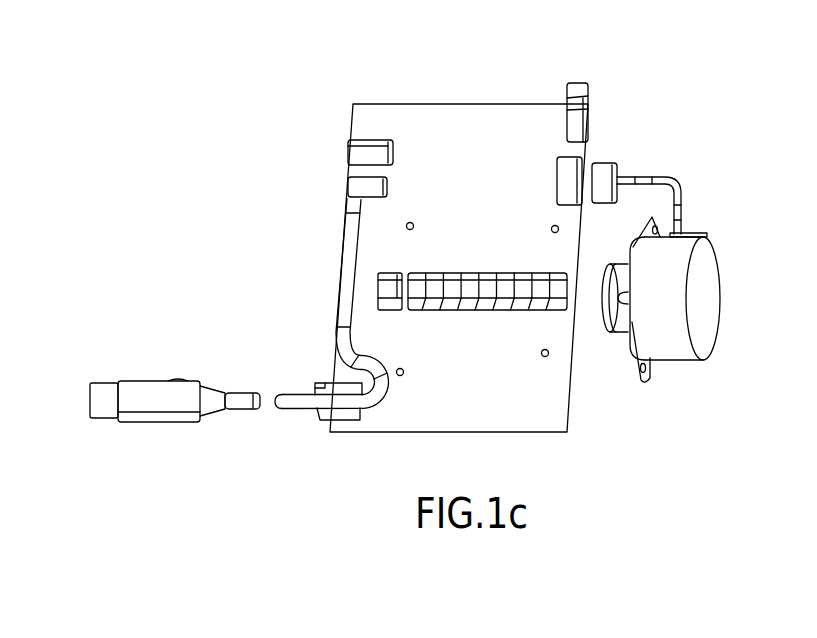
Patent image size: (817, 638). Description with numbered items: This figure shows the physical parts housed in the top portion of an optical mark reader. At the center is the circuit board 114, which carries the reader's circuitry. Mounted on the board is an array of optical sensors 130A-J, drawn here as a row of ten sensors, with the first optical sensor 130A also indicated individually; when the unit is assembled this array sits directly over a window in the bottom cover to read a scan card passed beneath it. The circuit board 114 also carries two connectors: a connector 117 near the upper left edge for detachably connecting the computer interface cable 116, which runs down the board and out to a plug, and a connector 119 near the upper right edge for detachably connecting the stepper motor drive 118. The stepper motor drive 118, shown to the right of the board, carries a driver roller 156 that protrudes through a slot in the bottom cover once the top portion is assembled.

The circuit board 114 is at (477, 120).
The computer interface cable 116 is at (341, 255).
The connector 117 is at (365, 150).
The stepper motor drive 118 is at (715, 283).
The connector 119 is at (566, 180).
The optical sensor 130A is at (388, 281).
The array of optical sensors 130A-J is at (567, 313).
The driver roller 156 is at (612, 332).